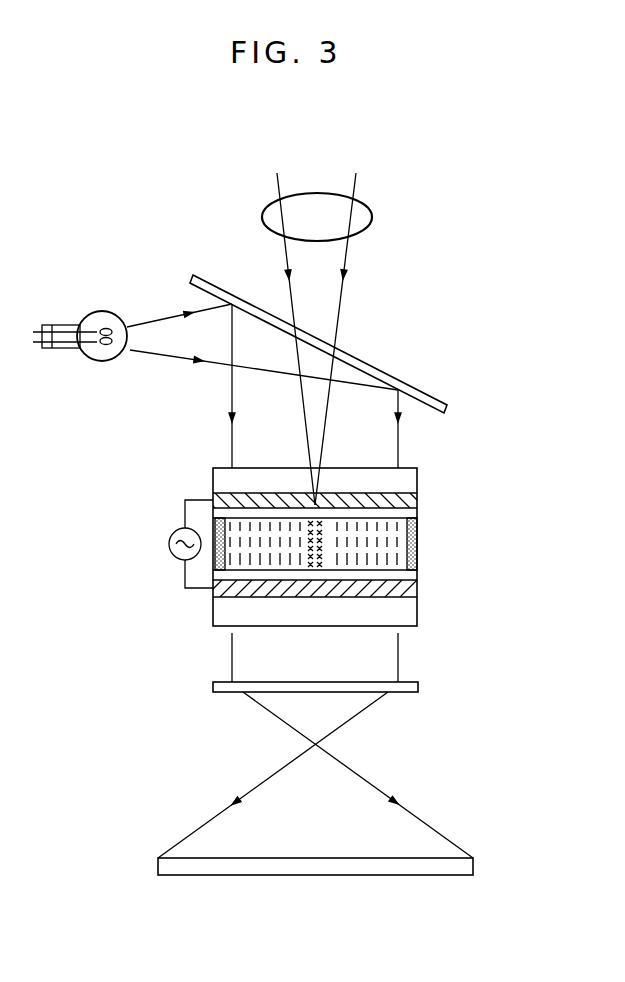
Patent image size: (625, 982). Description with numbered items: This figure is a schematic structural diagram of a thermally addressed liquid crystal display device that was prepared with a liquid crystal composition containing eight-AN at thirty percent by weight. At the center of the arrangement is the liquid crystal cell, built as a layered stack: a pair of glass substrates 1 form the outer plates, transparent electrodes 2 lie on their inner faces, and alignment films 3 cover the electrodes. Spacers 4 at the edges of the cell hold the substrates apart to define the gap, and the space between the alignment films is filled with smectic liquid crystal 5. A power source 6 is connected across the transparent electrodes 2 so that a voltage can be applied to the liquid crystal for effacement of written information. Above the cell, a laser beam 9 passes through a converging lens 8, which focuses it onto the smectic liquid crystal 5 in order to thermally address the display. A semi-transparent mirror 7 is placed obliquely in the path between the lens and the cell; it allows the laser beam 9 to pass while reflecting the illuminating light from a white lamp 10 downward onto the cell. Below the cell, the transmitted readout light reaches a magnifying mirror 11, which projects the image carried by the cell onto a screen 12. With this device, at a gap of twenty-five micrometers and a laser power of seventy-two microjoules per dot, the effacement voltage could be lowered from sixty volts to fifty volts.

The glass substrates 1 is at (413, 478).
The transparent electrodes 2 is at (413, 500).
The alignment films 3 is at (413, 515).
The spacers 4 is at (413, 557).
The smectic liquid crystal 5 is at (400, 537).
The power source 6 is at (168, 553).
The semi-transparent mirror 7 is at (438, 391).
The converging lens 8 is at (366, 218).
The laser beam 9 is at (350, 302).
The white lamp 10 is at (95, 357).
The magnifying mirror 11 is at (418, 687).
The screen 12 is at (473, 865).